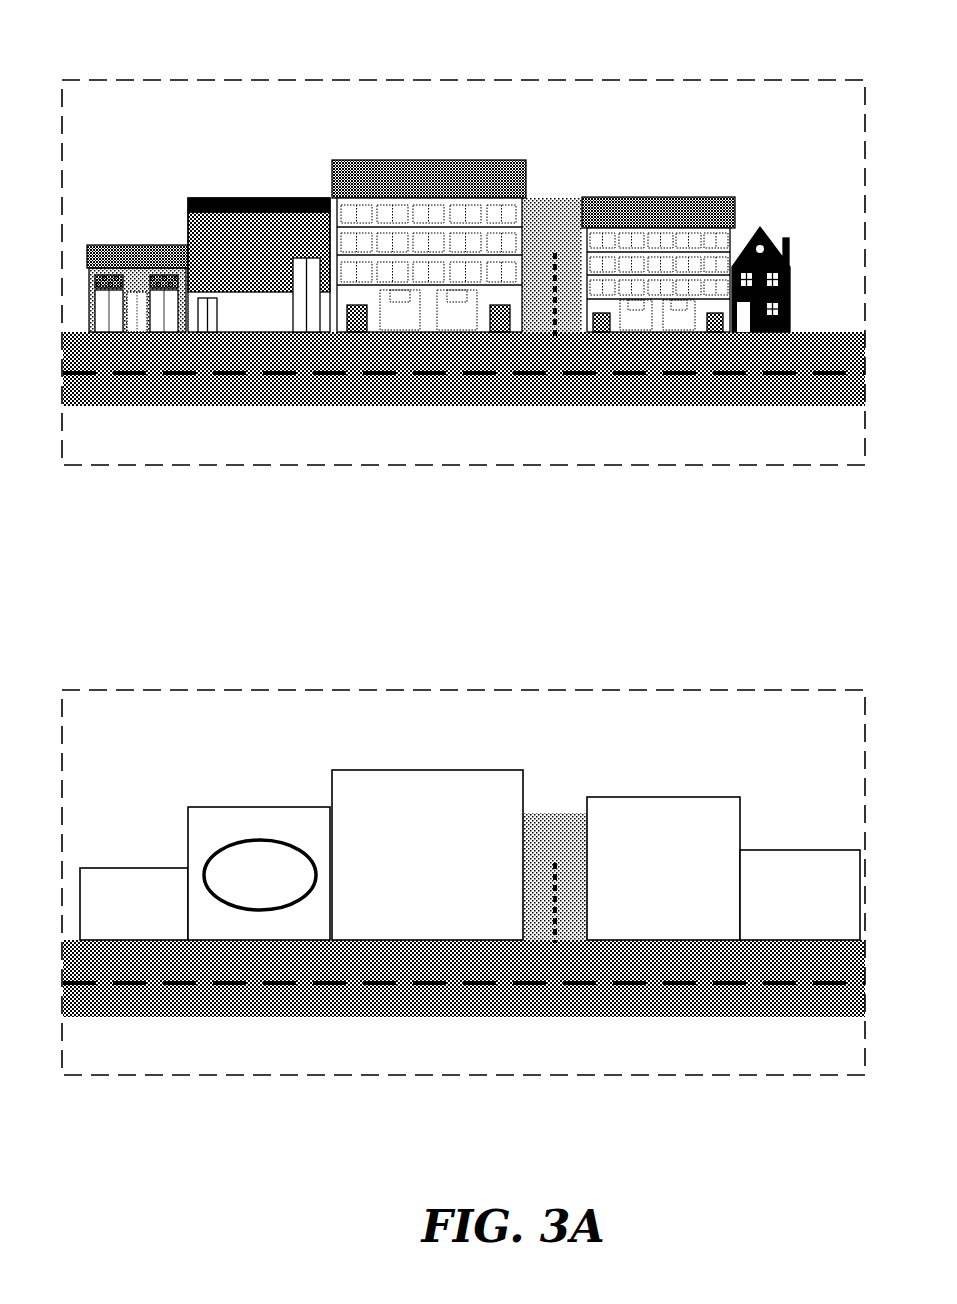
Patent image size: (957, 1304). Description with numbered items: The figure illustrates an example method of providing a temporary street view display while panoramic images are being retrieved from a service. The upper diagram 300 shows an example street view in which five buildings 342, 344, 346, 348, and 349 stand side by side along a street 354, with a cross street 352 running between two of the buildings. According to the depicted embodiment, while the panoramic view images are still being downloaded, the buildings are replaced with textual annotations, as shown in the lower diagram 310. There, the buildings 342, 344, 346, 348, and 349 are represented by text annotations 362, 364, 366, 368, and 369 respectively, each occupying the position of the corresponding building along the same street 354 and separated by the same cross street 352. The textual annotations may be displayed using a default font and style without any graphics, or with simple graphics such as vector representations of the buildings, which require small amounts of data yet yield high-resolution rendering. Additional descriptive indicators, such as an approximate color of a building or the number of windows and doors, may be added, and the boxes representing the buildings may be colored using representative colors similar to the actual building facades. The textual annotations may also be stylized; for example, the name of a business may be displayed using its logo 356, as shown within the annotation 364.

The diagram 300 is at (728, 62).
The diagram 310 is at (728, 672).
The building 342 is at (160, 215).
The building 344 is at (270, 178).
The building 346 is at (434, 150).
The building 348 is at (680, 185).
The building 349 is at (762, 210).
The cross street 352 is at (540, 343).
The street 354 is at (378, 415).
The logo 356 is at (225, 838).
The text annotation 362 is at (160, 857).
The text annotation 364 is at (270, 787).
The text annotation 366 is at (434, 758).
The text annotation 368 is at (680, 792).
The text annotation 369 is at (762, 818).